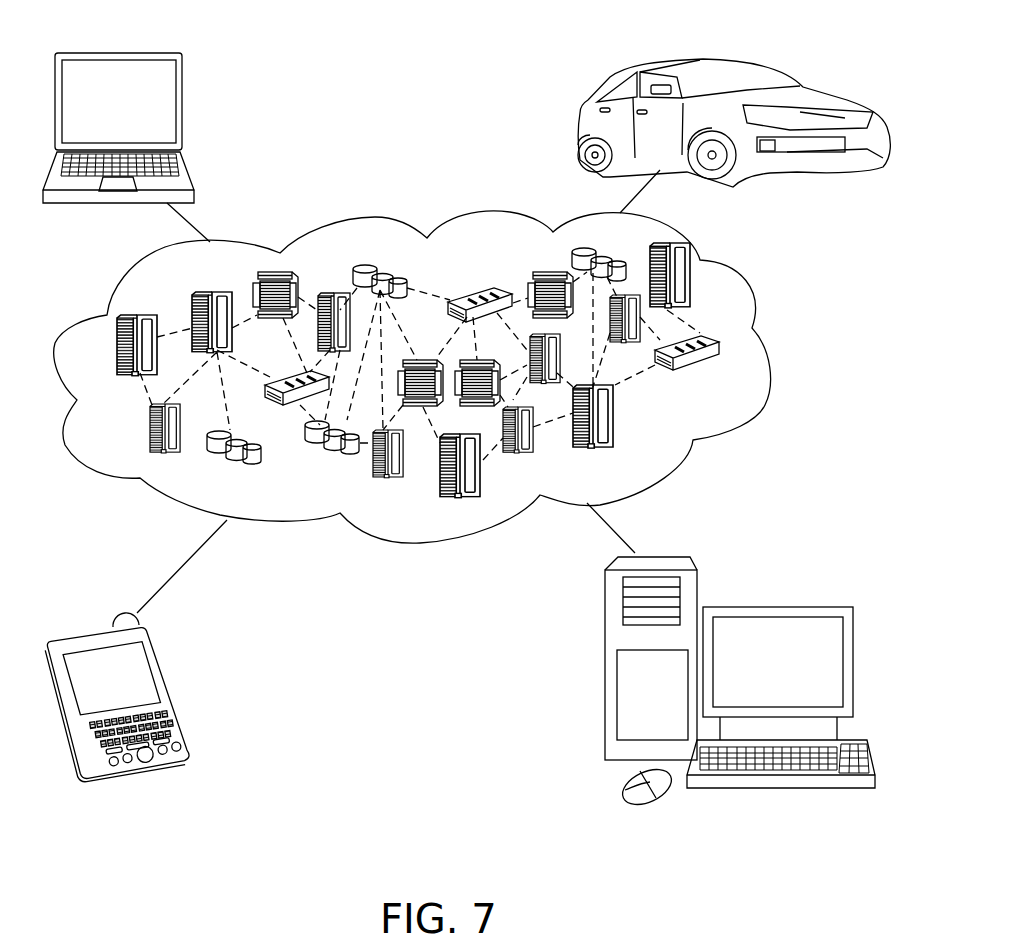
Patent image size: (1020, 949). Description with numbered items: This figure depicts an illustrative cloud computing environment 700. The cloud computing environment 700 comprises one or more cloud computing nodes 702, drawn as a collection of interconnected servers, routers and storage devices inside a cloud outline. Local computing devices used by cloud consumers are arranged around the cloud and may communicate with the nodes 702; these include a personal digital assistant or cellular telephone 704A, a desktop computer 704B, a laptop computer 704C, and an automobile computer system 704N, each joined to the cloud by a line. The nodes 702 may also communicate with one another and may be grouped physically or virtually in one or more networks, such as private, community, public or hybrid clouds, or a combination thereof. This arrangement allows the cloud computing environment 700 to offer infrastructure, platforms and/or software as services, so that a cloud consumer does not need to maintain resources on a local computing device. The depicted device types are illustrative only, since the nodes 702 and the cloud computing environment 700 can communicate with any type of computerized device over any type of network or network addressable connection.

The cloud computing environment 700 is at (447, 377).
The cloud computing nodes 702 is at (728, 379).
The personal digital assistant (PDA) or cellular telephone 704A is at (163, 660).
The desktop computer 704B is at (767, 607).
The laptop computer 704C is at (183, 85).
The automobile computer system 704N is at (578, 124).